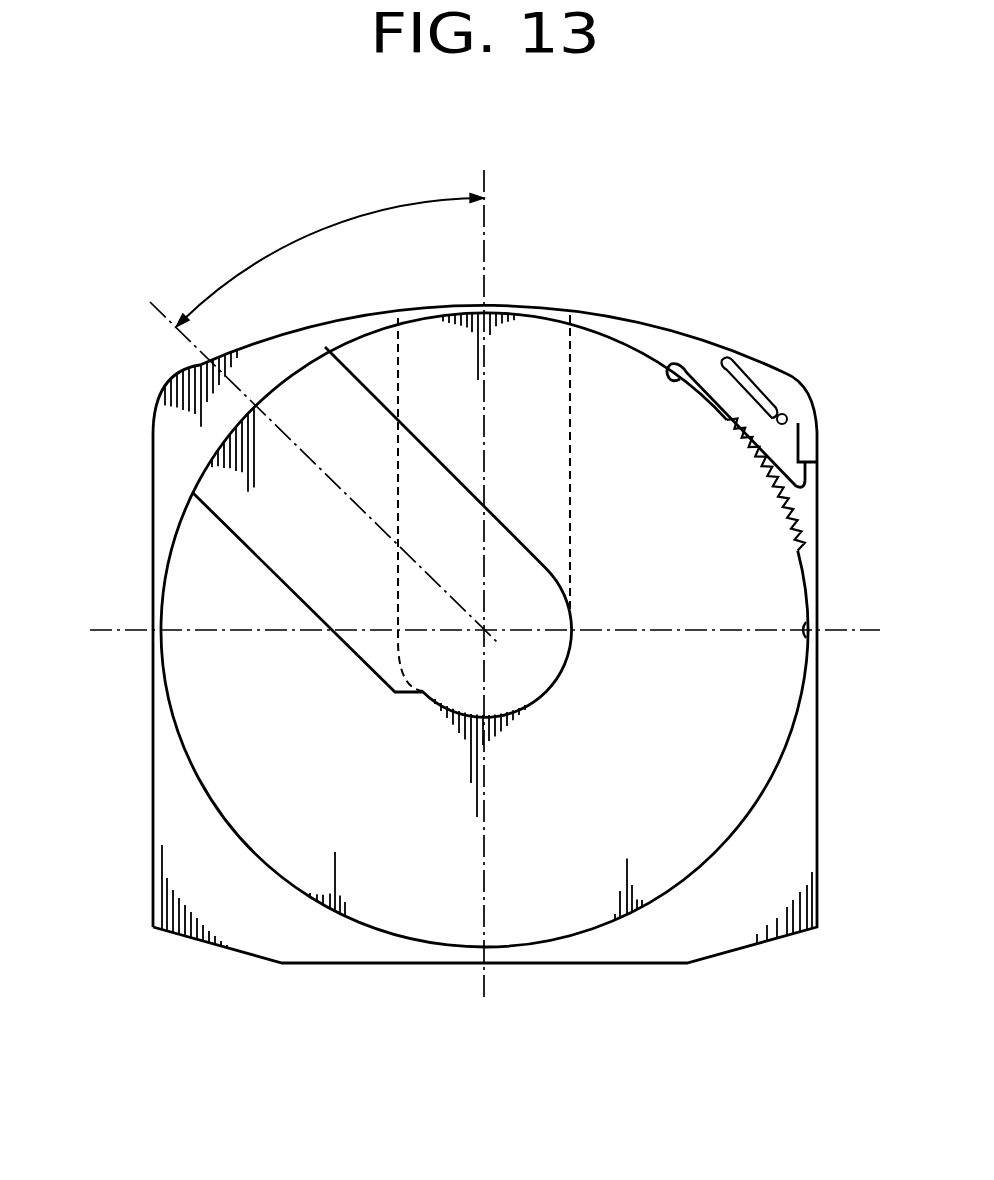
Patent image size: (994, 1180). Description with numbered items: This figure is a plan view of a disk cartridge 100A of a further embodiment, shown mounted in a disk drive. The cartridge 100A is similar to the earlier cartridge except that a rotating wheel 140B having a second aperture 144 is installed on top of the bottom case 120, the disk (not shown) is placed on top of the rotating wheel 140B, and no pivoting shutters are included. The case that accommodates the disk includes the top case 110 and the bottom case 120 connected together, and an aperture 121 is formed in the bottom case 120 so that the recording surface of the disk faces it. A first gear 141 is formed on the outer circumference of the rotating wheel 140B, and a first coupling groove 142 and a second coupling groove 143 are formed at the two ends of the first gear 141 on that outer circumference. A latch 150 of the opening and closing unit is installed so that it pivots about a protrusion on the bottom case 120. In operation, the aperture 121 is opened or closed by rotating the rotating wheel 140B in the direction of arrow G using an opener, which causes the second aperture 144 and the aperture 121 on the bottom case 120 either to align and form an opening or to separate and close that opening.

The disk cartridge 100A is at (152, 385).
The top case 110 is at (167, 453).
The bottom case 120 is at (377, 350).
The aperture 121 is at (542, 328).
The disc 140B is at (185, 700).
The first gear 141 is at (757, 465).
The first coupling groove 142 is at (805, 633).
The second coupling groove 143 is at (670, 372).
The second aperture 144 is at (354, 565).
The latch 150 is at (787, 440).
The arrow G is at (330, 261).